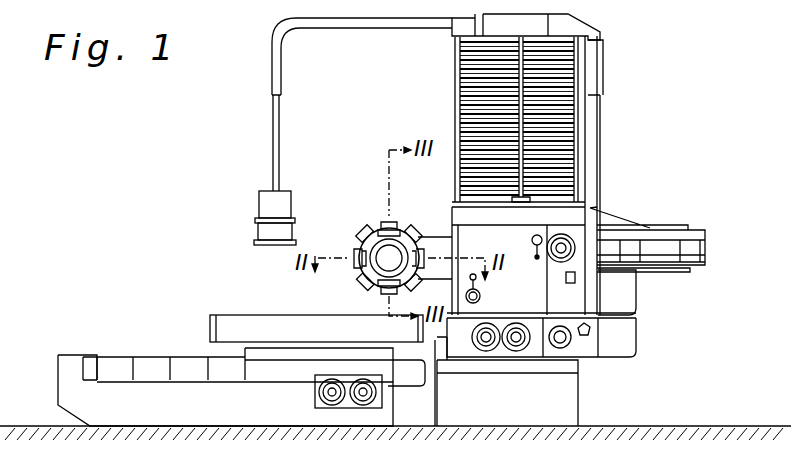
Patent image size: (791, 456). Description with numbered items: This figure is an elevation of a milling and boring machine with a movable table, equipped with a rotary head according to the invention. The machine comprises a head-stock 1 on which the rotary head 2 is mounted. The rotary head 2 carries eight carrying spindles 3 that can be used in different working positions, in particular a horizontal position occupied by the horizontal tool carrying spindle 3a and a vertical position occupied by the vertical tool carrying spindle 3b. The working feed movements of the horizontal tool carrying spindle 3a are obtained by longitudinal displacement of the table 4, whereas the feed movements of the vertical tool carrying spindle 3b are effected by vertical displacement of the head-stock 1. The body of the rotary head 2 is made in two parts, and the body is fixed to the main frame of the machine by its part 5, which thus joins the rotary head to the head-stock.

The head-stock 1 is at (517, 237).
The rotary head 2 is at (400, 231).
The carrying spindles 3 is at (366, 238).
The horizontal tool carrying spindle 3a is at (352, 264).
The vertical tool carrying spindle 3b is at (395, 302).
The table 4 is at (215, 326).
The body part 5 is at (433, 242).